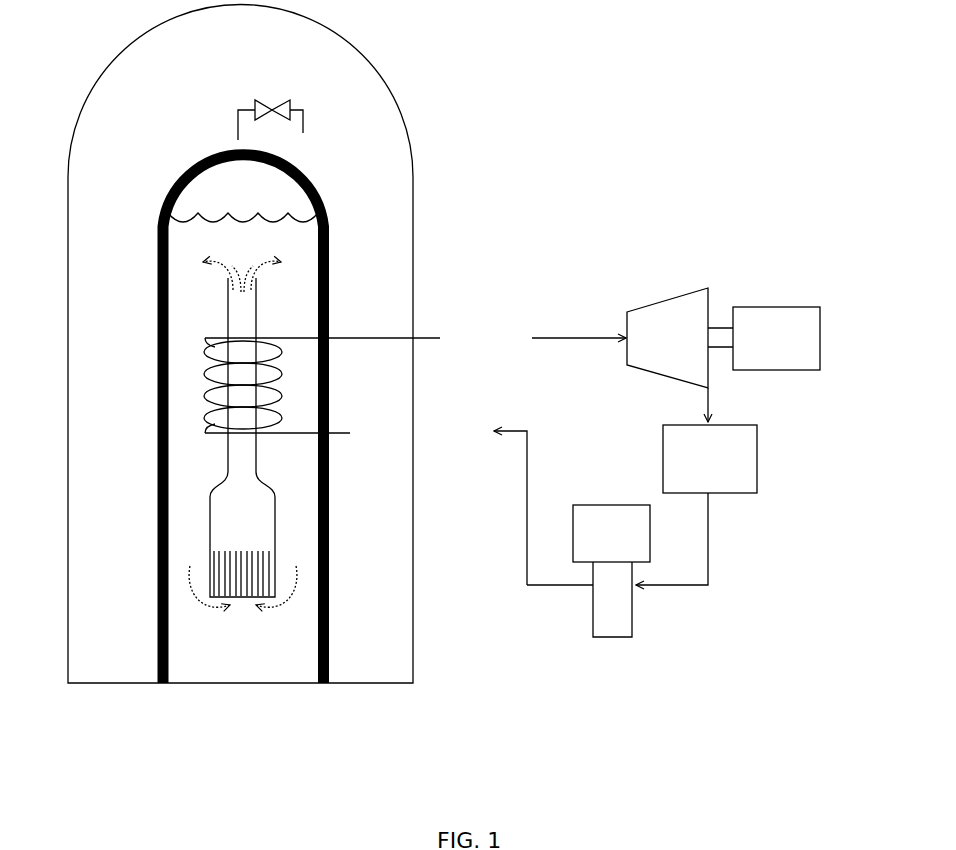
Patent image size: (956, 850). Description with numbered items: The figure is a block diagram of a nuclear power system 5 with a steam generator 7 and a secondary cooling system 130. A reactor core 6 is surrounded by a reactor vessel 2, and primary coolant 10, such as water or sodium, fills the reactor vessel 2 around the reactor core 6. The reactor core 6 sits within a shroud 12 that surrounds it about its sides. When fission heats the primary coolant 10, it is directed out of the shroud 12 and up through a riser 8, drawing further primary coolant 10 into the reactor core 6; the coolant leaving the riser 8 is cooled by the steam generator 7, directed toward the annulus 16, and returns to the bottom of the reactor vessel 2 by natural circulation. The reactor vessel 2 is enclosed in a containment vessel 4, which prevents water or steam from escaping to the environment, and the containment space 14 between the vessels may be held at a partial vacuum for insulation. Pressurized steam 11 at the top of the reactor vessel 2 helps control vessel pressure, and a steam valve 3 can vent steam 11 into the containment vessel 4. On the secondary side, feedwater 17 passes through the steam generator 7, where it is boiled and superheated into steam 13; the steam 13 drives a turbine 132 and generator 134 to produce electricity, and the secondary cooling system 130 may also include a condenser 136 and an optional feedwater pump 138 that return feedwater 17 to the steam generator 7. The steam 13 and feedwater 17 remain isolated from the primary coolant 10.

The nuclear power system 5 is at (548, 90).
The containment vessel 4 is at (417, 154).
The containment interior region 14 is at (196, 80).
The reactor vessel 2 is at (318, 175).
The steam valve 3 is at (277, 101).
The pressurized steam 11 is at (253, 200).
The riser 8 is at (260, 310).
The annulus 16 is at (270, 474).
The shroud 12 is at (287, 523).
The reactor core 6 is at (204, 560).
The primary coolant 10 is at (257, 662).
The steam generator 7 is at (190, 378).
The steam 13 is at (478, 322).
The feedwater 17 is at (478, 419).
The secondary cooling system 130 is at (664, 284).
The turbine 132 is at (688, 348).
The generator 134 is at (796, 348).
The condenser 136 is at (725, 474).
The feedwater pump 138 is at (629, 540).